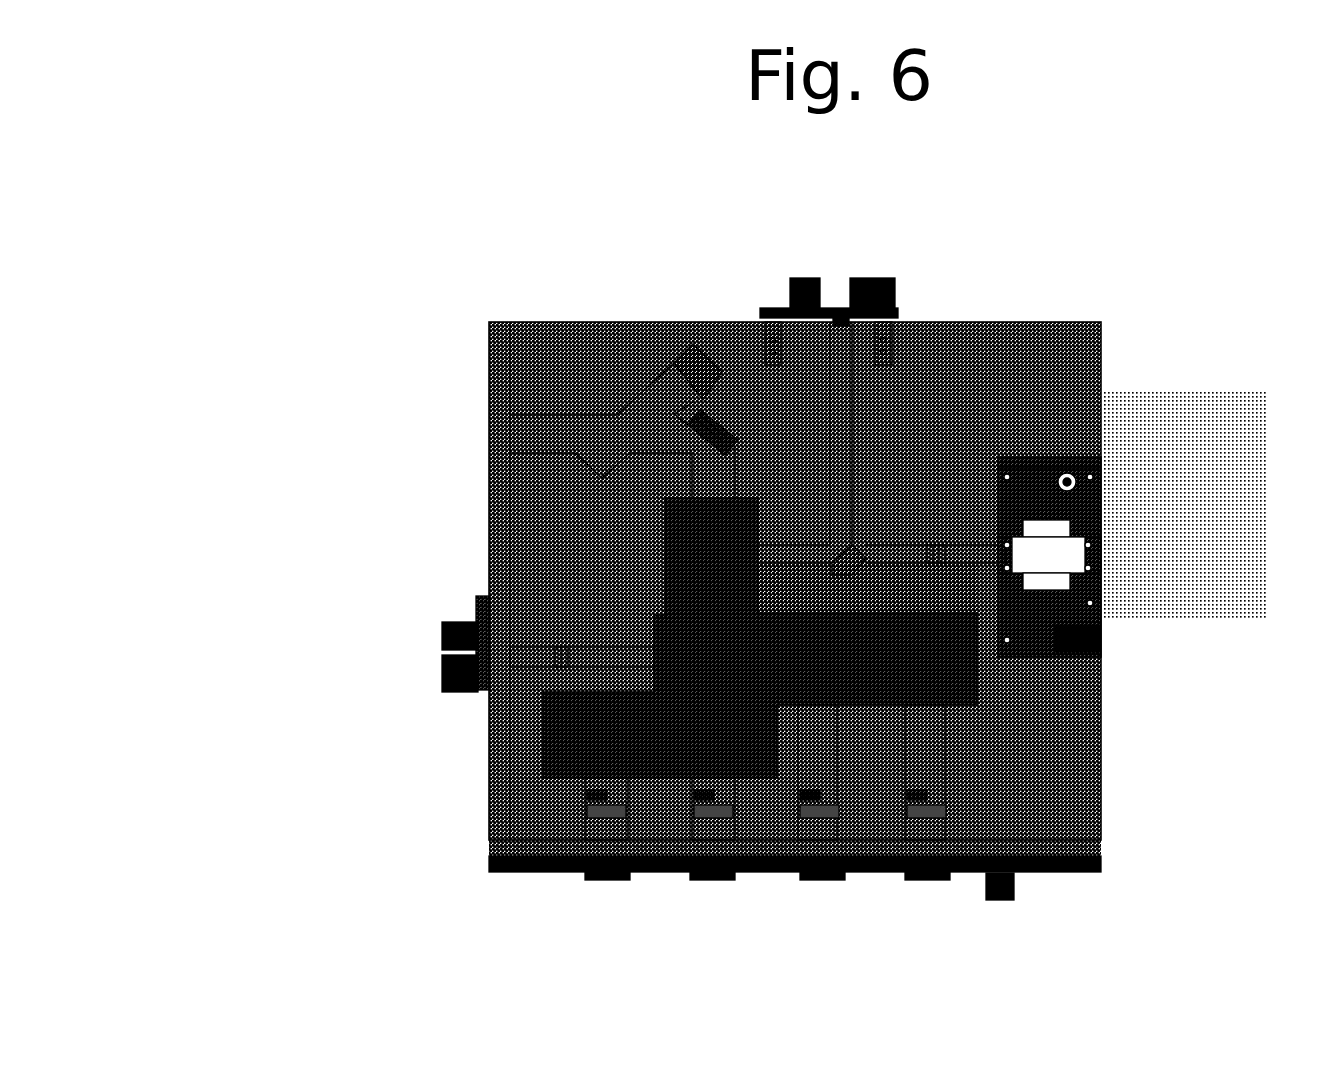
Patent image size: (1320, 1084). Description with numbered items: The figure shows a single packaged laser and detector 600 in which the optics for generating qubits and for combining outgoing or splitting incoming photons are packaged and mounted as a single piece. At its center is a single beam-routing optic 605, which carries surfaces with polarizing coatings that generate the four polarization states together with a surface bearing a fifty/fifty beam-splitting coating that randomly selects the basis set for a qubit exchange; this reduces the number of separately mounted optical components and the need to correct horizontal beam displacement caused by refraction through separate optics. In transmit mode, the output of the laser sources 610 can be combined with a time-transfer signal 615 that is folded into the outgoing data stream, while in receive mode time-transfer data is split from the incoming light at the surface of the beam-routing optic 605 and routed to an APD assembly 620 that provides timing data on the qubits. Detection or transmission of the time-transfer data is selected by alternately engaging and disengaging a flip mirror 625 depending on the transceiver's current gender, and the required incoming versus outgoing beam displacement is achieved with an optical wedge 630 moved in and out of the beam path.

The single packaged laser and detector 600 is at (243, 124).
The beam-routing optic 605 is at (683, 598).
The laser sources 610 is at (590, 795).
The time-transfer signal 615 is at (1098, 475).
The APD assembly 620 is at (1020, 278).
The flip mirror 625 is at (866, 547).
The optical wedge 630 is at (628, 433).